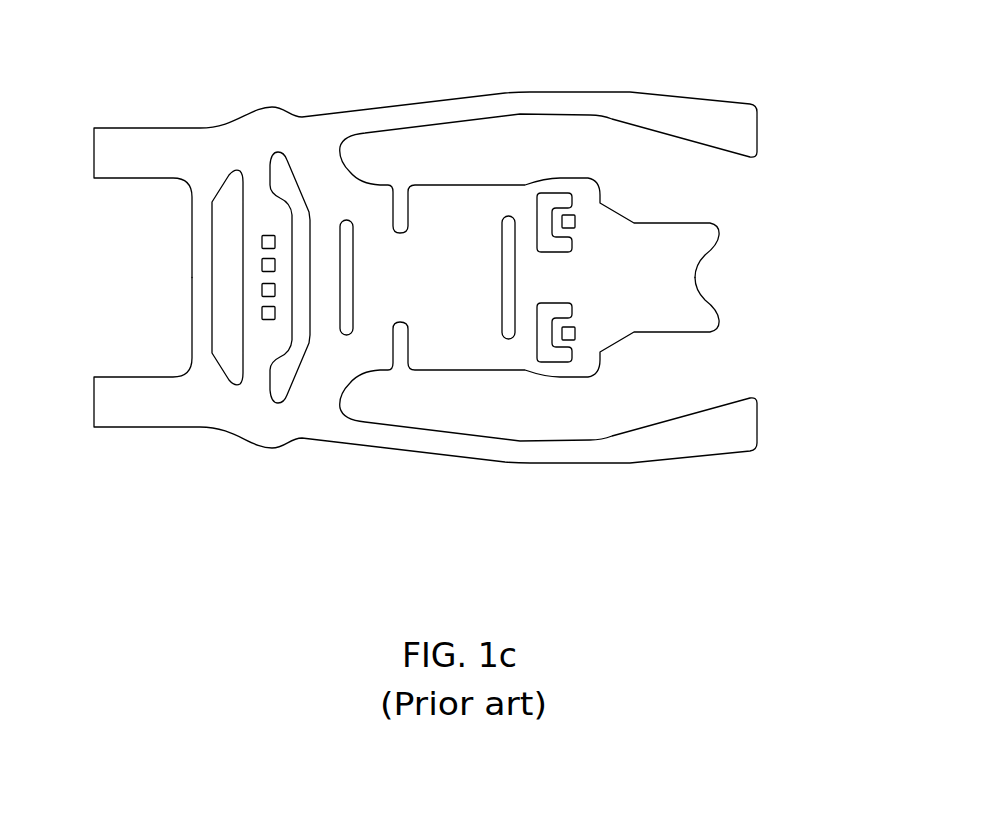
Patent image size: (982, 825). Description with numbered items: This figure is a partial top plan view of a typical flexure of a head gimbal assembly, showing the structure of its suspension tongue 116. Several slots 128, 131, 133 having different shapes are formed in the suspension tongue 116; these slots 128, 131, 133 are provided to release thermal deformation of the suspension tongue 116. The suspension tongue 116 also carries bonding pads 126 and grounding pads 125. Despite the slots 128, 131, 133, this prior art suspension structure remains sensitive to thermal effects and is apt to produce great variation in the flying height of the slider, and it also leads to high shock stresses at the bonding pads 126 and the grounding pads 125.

The suspension tongue 116 is at (712, 273).
The grounding pads 125 is at (570, 218).
The bonding pads 126 is at (262, 313).
The slot 128 is at (280, 172).
The slot 131 is at (547, 202).
The slot 133 is at (503, 227).